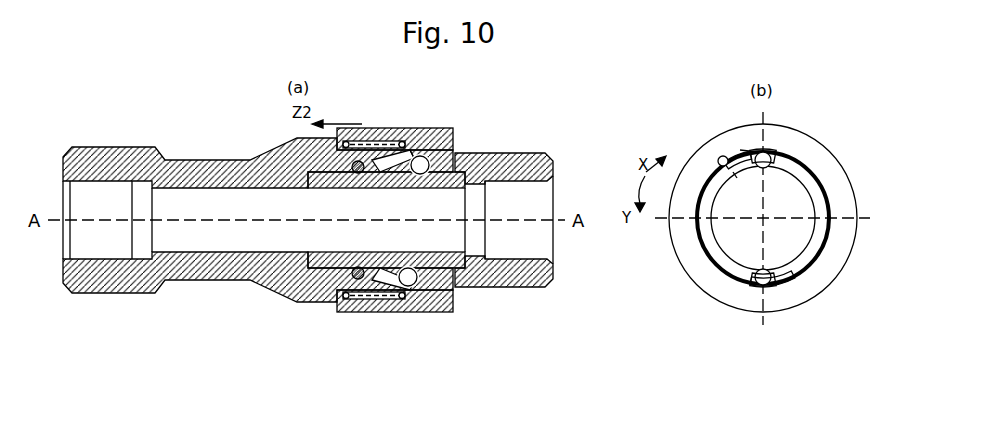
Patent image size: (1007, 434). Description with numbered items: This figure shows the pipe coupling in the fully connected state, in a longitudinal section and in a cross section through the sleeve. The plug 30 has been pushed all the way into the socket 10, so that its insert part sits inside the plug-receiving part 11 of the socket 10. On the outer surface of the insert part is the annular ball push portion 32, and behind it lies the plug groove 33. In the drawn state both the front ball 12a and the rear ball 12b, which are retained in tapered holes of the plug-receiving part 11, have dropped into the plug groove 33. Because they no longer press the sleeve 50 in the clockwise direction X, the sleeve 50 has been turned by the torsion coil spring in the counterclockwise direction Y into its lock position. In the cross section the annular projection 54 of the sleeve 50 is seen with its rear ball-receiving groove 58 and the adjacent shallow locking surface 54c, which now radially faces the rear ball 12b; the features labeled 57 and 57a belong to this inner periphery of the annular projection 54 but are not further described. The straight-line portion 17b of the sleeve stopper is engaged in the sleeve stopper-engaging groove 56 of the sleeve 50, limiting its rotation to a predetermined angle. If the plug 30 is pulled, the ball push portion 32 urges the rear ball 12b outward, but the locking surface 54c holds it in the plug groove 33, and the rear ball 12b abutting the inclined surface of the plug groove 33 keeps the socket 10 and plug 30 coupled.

The socket 10 is at (192, 158).
The plug-receiving part 11 is at (458, 160).
The front ball 12a is at (422, 155).
The rear ball 12b is at (414, 266).
The straight-line portion of the sleeve stopper 17b is at (736, 174).
The plug 30 is at (503, 153).
The ball push portion 32 is at (383, 180).
The plug groove 33 is at (415, 180).
The sleeve 50 is at (347, 313).
The annular projection 54 is at (412, 130).
The locking surface 54c is at (760, 288).
The sleeve stopper-engaging groove 56 is at (720, 158).
The lever 57 is at (740, 150).
The lever tip 57a is at (758, 152).
The rear ball-receiving groove 58 is at (780, 288).